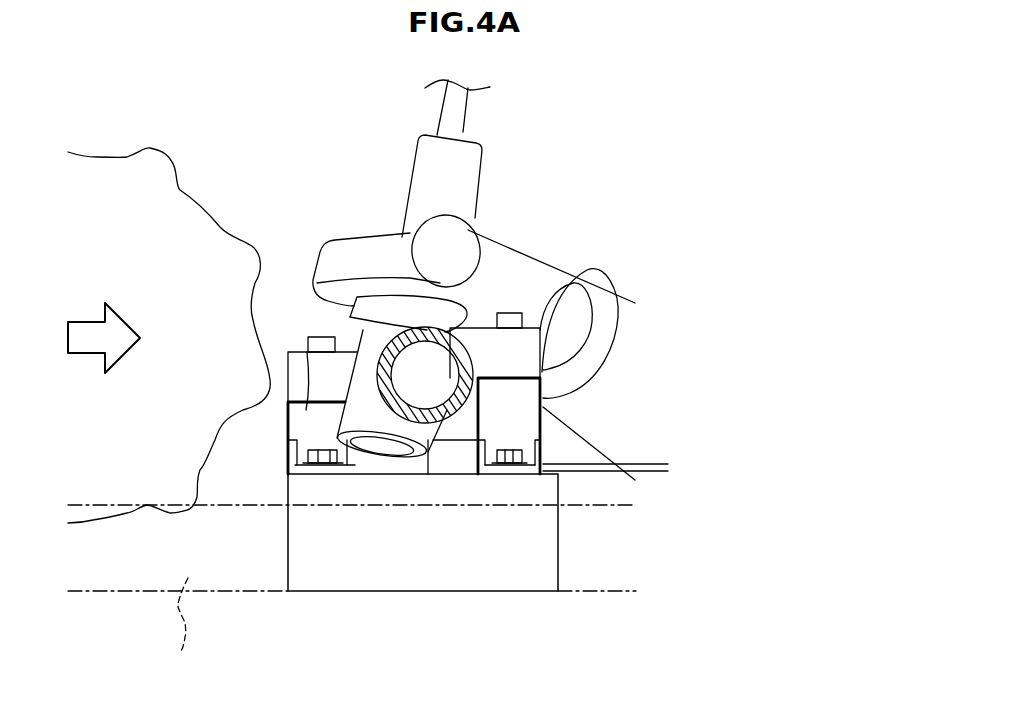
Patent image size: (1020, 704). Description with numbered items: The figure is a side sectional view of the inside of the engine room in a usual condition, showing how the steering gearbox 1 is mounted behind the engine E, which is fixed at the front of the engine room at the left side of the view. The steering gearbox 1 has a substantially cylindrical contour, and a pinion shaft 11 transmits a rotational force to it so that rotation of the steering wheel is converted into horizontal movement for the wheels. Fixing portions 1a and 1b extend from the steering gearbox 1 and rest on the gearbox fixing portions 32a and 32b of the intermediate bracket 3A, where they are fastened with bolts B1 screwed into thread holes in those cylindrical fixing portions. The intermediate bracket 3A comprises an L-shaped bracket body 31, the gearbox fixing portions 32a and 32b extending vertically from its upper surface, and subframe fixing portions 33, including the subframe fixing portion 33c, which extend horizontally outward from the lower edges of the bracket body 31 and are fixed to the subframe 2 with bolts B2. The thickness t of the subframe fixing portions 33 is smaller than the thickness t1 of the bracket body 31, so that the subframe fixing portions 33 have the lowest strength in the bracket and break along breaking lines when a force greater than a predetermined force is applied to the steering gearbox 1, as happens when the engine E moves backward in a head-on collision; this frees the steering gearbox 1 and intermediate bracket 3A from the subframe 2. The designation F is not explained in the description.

The steering gearbox 1 is at (403, 330).
The pinion shaft 11 is at (458, 118).
The fixing portion 1a is at (317, 360).
The fixing portion 1b is at (537, 348).
The subframe 2 is at (290, 490).
The intermediate bracket 3A is at (553, 385).
The bracket body 31 is at (437, 468).
The gearbox fixing portion 32a is at (290, 352).
The gearbox fixing portion 32b is at (543, 310).
The subframe fixing portions 33 is at (325, 468).
The subframe fixing portion 33c is at (510, 468).
The bolt B1 is at (320, 337).
The bolt B2 is at (300, 445).
The engine E is at (95, 173).
The front F is at (181, 629).
The thickness t is at (668, 437).
The thickness t1 is at (467, 442).